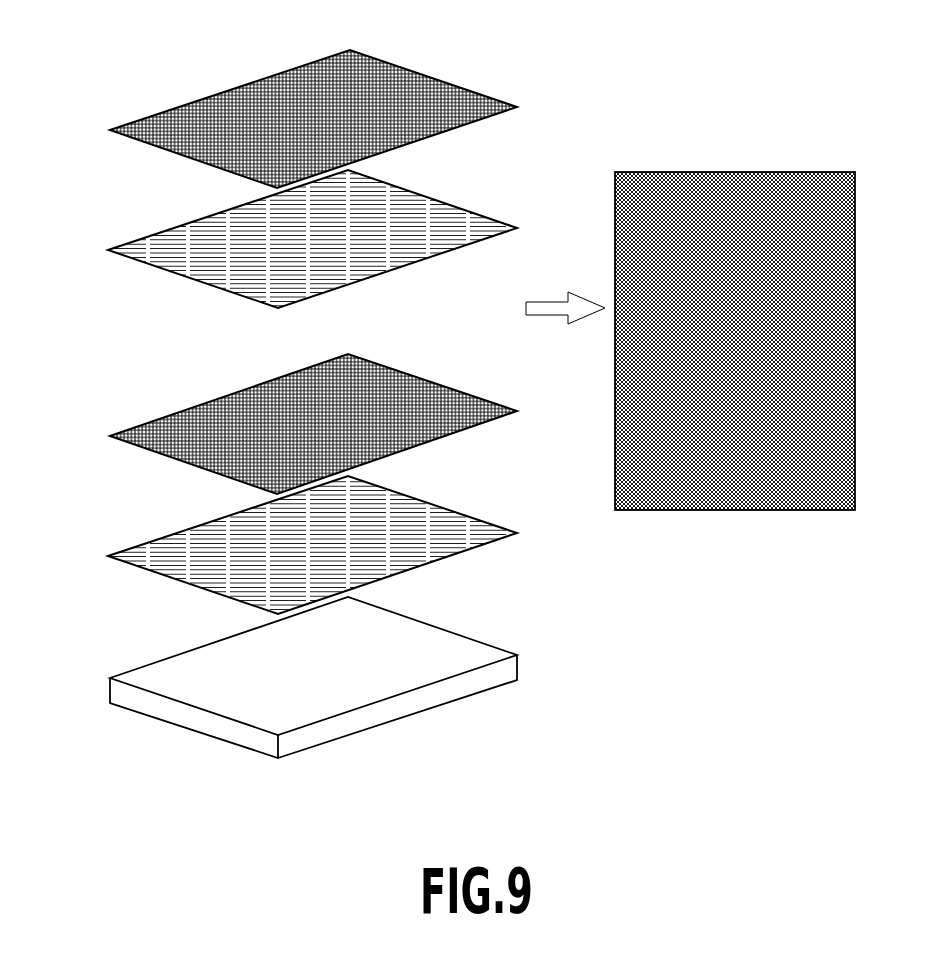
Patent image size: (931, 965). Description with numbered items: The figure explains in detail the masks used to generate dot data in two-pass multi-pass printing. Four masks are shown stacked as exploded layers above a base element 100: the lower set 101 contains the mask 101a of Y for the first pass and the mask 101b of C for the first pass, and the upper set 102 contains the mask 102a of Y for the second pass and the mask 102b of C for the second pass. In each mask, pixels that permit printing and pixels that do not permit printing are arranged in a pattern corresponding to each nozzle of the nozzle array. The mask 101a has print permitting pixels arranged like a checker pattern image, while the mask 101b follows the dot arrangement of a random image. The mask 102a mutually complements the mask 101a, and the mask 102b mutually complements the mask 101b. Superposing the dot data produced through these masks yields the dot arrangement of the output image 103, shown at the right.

The substrate 100 is at (494, 648).
The first layer assembly 101 is at (95, 333).
The mask of Y for the first pass 101a is at (493, 523).
The mask of C for the first pass 101b is at (493, 402).
The second layer assembly 102 is at (95, 35).
The mask of Y for the second pass 102a is at (493, 219).
The mask of C for the second pass 102b is at (493, 98).
The output image 103 is at (742, 510).